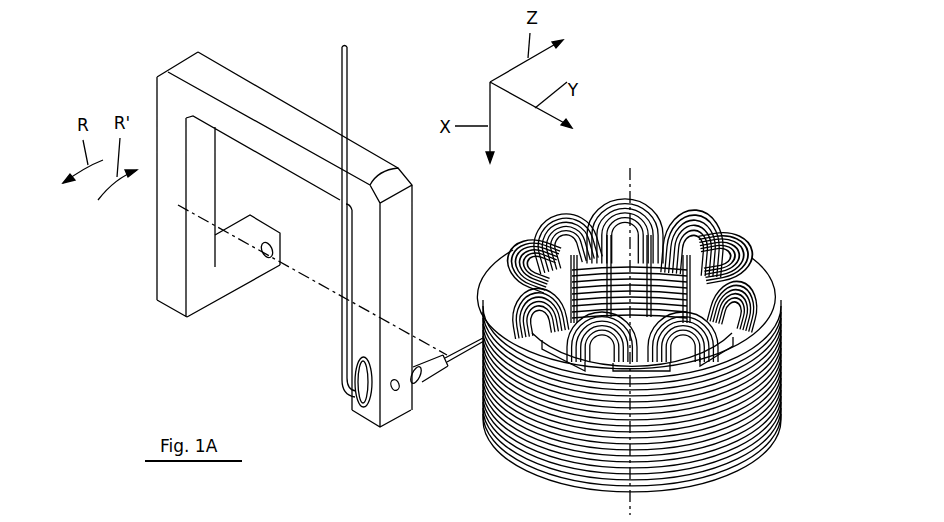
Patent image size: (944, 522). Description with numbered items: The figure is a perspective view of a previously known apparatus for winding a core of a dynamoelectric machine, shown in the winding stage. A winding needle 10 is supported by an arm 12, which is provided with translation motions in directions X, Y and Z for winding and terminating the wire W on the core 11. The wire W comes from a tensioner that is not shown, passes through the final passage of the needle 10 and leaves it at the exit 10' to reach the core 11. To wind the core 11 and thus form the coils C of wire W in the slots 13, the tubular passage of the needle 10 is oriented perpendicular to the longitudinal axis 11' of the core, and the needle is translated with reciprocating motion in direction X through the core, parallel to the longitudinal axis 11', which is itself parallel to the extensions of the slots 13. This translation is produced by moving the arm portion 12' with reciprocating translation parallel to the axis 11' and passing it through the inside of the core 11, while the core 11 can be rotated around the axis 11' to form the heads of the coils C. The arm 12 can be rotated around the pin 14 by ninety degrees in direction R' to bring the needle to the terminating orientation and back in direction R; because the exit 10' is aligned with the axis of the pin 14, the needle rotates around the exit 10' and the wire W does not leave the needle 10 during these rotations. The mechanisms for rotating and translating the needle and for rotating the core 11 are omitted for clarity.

The winding needle 10 is at (431, 401).
The exit 10' is at (460, 322).
The core 11 is at (659, 371).
The longitudinal axis 11' is at (666, 329).
The arm 12 is at (302, 181).
The arm portion 12' is at (403, 297).
The slots 13 is at (638, 262).
The pin 14 is at (225, 222).
The wire W is at (343, 87).
The coils C is at (560, 215).